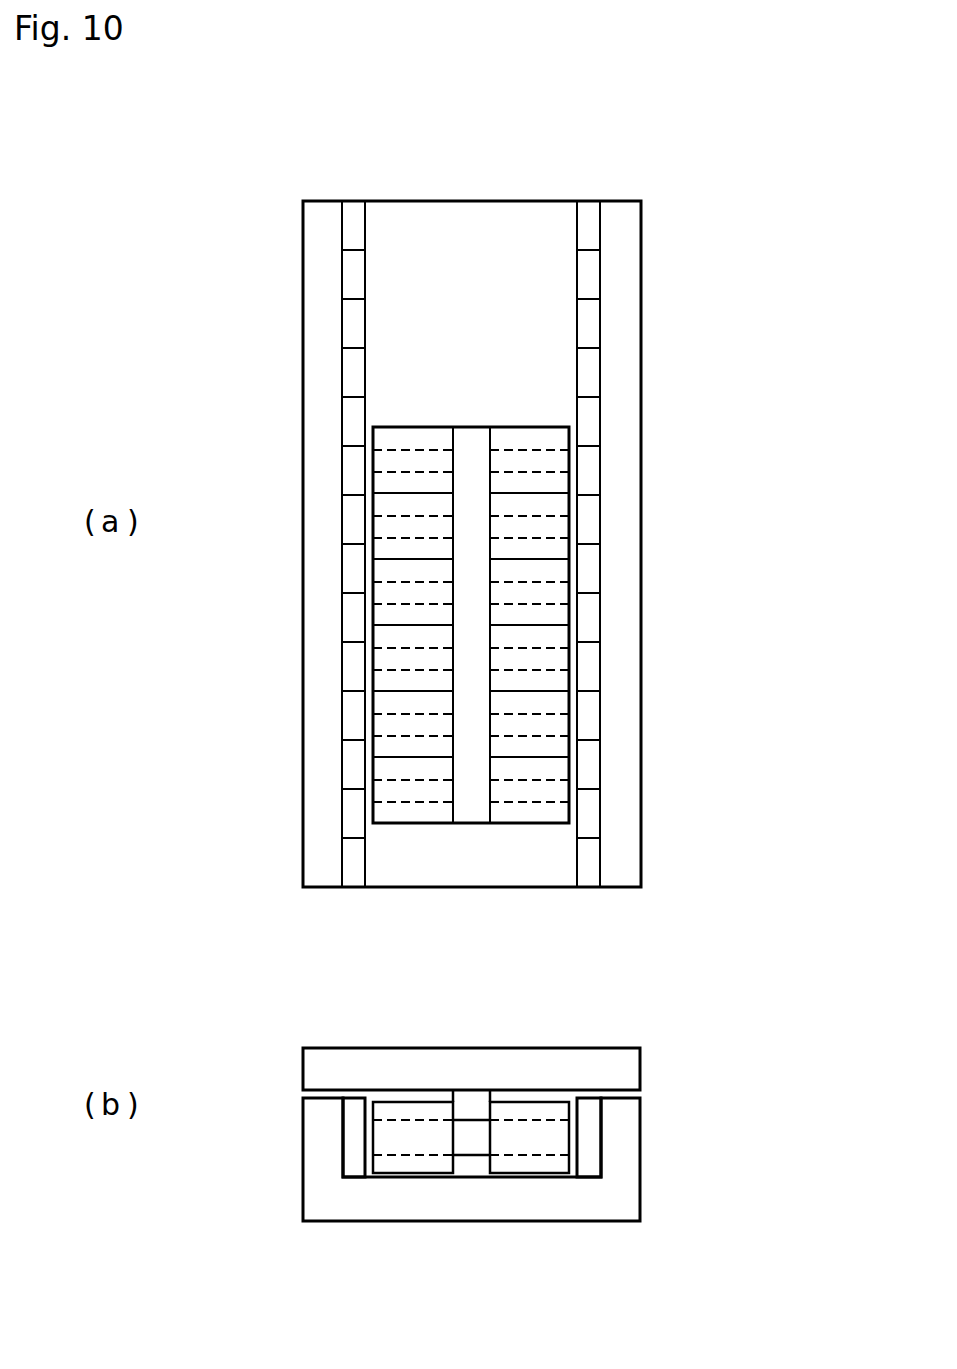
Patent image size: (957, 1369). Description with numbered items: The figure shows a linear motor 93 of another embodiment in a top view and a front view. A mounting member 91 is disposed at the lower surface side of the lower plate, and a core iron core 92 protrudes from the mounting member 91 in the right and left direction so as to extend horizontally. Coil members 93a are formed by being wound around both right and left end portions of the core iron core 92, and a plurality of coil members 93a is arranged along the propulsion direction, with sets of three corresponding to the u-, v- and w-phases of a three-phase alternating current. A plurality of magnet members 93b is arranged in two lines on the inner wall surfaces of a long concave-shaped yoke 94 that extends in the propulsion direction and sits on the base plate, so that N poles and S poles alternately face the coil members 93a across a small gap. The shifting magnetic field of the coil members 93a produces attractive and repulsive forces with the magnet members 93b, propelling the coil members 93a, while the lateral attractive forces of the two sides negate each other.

The mounting member 91 is at (472, 443).
The core iron core 92 is at (395, 452).
The linear motor 93 is at (465, 829).
The coil member 93a is at (433, 442).
The magnet member 93b is at (352, 483).
The yoke 94 is at (625, 623).